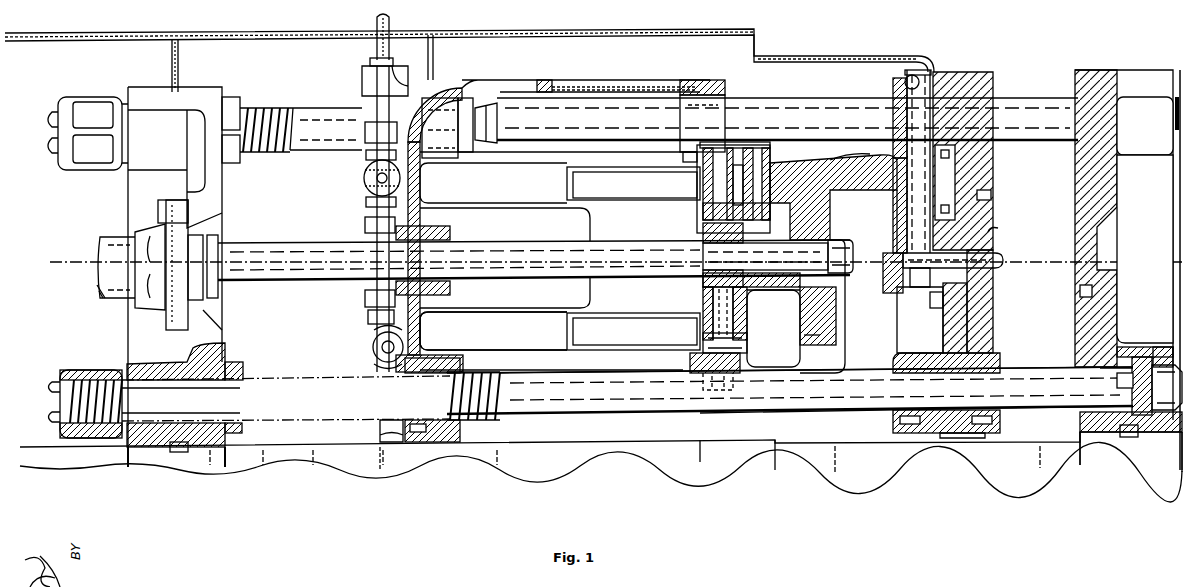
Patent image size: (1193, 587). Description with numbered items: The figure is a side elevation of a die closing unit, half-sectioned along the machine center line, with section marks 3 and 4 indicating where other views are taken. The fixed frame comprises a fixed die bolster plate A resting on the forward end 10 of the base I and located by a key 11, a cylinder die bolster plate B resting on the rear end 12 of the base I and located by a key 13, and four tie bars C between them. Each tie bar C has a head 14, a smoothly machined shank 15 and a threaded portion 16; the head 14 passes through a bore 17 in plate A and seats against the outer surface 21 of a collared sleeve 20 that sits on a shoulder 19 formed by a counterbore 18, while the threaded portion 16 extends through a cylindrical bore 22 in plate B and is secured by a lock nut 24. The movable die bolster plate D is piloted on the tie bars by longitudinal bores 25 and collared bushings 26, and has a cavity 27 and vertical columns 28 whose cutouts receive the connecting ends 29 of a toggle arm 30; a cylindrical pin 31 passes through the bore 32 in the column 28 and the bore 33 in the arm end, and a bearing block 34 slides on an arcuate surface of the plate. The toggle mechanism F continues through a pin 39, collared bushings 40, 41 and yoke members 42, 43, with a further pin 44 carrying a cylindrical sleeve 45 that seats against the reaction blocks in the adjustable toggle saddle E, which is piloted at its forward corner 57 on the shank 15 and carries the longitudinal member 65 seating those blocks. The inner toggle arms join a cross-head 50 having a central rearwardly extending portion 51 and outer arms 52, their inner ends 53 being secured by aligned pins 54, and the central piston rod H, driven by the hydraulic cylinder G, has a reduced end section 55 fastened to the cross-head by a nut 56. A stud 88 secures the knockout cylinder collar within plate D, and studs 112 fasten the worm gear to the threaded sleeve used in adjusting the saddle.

The section line 3 is at (658, 70).
The section line 4 is at (332, 7).
The forward end of the base 10 is at (1102, 447).
The key 11 is at (1132, 437).
The rear end of the base 12 is at (149, 463).
The key 13 is at (186, 448).
The head 14 is at (1170, 387).
The shank 15 is at (834, 394).
The threaded portion 16 is at (278, 407).
The bore 17 is at (1092, 397).
The counterbore 18 is at (1162, 352).
The shoulder 19 is at (1132, 347).
The collared sleeve 20 is at (1134, 386).
The outer surface of the sleeve 21 is at (1148, 440).
The cylindrical bore 22 is at (185, 384).
The lock nut 24 is at (235, 362).
The longitudinal cylindrical bore 25 is at (957, 399).
The collared bushing 26 is at (893, 362).
The cavity 27 is at (932, 340).
The vertical cylindrical column 28 is at (892, 83).
The connecting end 29 is at (862, 222).
The toggle arm 30 is at (835, 158).
The cylindrical pin 31 is at (926, 148).
The cylindrical bore 32 is at (908, 76).
The cylindrical bore 33 is at (907, 170).
The bearing block 34 is at (896, 222).
The pin 39 is at (776, 140).
The collared bushing 40 is at (770, 158).
The collared bushing 41 is at (760, 216).
The yoke member 42 is at (733, 140).
The yoke member 43 is at (703, 224).
The pin 44 is at (683, 156).
The cylindrical sleeve 45 is at (697, 186).
The cross-head 50 is at (774, 306).
The central rearwardly extending portion 51 is at (758, 291).
The outer arm 52 is at (753, 360).
The inner end 53 is at (756, 346).
The aligned pin 54 is at (710, 292).
The reduced end section 55 is at (772, 262).
The nut 56 is at (846, 282).
The forward corner 57 is at (708, 120).
The longitudinal member 65 is at (556, 337).
The stud 88 is at (928, 305).
The stud 112 is at (384, 420).
The fixed die bolster plate A is at (1127, 270).
The cylinder die bolster plate B is at (175, 267).
The tie bar C is at (790, 256).
The movable die bolster plate D is at (972, 212).
The toggle saddle E is at (553, 226).
The toggle mechanism F is at (833, 204).
The hydraulic cylinder G is at (157, 265).
The central piston rod H is at (617, 260).
The base I is at (601, 467).